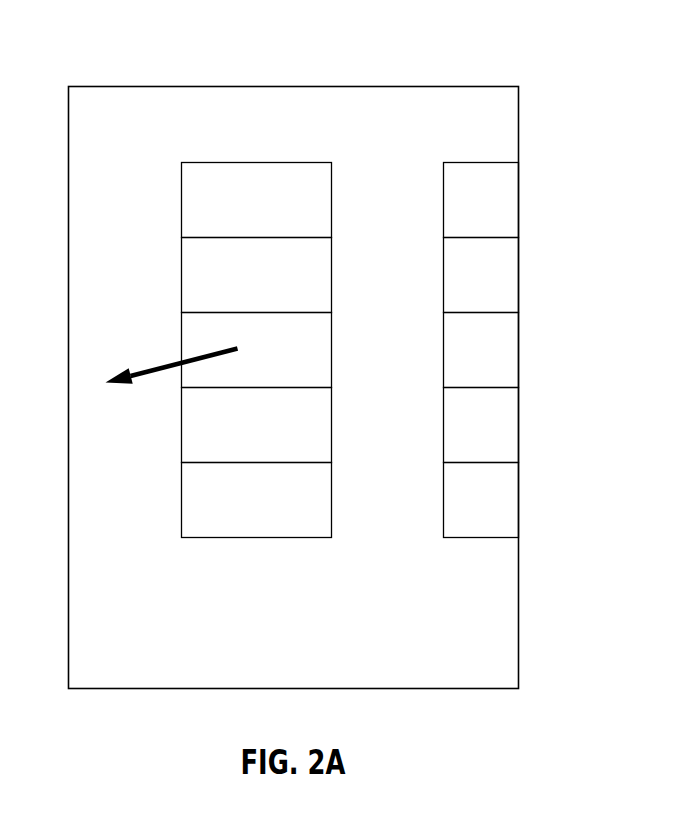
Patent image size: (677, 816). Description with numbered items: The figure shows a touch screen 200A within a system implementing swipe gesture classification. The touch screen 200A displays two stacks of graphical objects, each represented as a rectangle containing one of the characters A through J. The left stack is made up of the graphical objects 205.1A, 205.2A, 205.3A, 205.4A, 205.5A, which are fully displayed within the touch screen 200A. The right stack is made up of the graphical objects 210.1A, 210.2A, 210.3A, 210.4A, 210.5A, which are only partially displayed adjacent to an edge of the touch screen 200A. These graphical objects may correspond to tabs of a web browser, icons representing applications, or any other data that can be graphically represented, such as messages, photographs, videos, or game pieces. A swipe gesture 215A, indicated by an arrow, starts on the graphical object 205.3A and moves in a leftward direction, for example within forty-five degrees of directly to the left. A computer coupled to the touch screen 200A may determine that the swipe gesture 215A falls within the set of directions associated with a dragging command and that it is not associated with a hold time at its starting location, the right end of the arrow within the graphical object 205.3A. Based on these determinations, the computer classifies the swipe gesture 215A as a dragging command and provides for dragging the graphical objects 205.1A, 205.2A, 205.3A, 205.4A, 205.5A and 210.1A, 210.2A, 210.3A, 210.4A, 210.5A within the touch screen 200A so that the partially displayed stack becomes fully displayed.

The touch screen 200A is at (138, 61).
The graphical object 205.1A is at (331, 200).
The graphical object 205.2A is at (331, 274).
The graphical object 205.3A is at (331, 350).
The graphical object 205.4A is at (331, 424).
The graphical object 205.5A is at (331, 500).
The graphical object 210.1A is at (518, 200).
The graphical object 210.2A is at (518, 274).
The graphical object 210.3A is at (518, 350).
The graphical object 210.4A is at (518, 424).
The graphical object 210.5A is at (518, 500).
The swipe gesture 215A is at (156, 365).